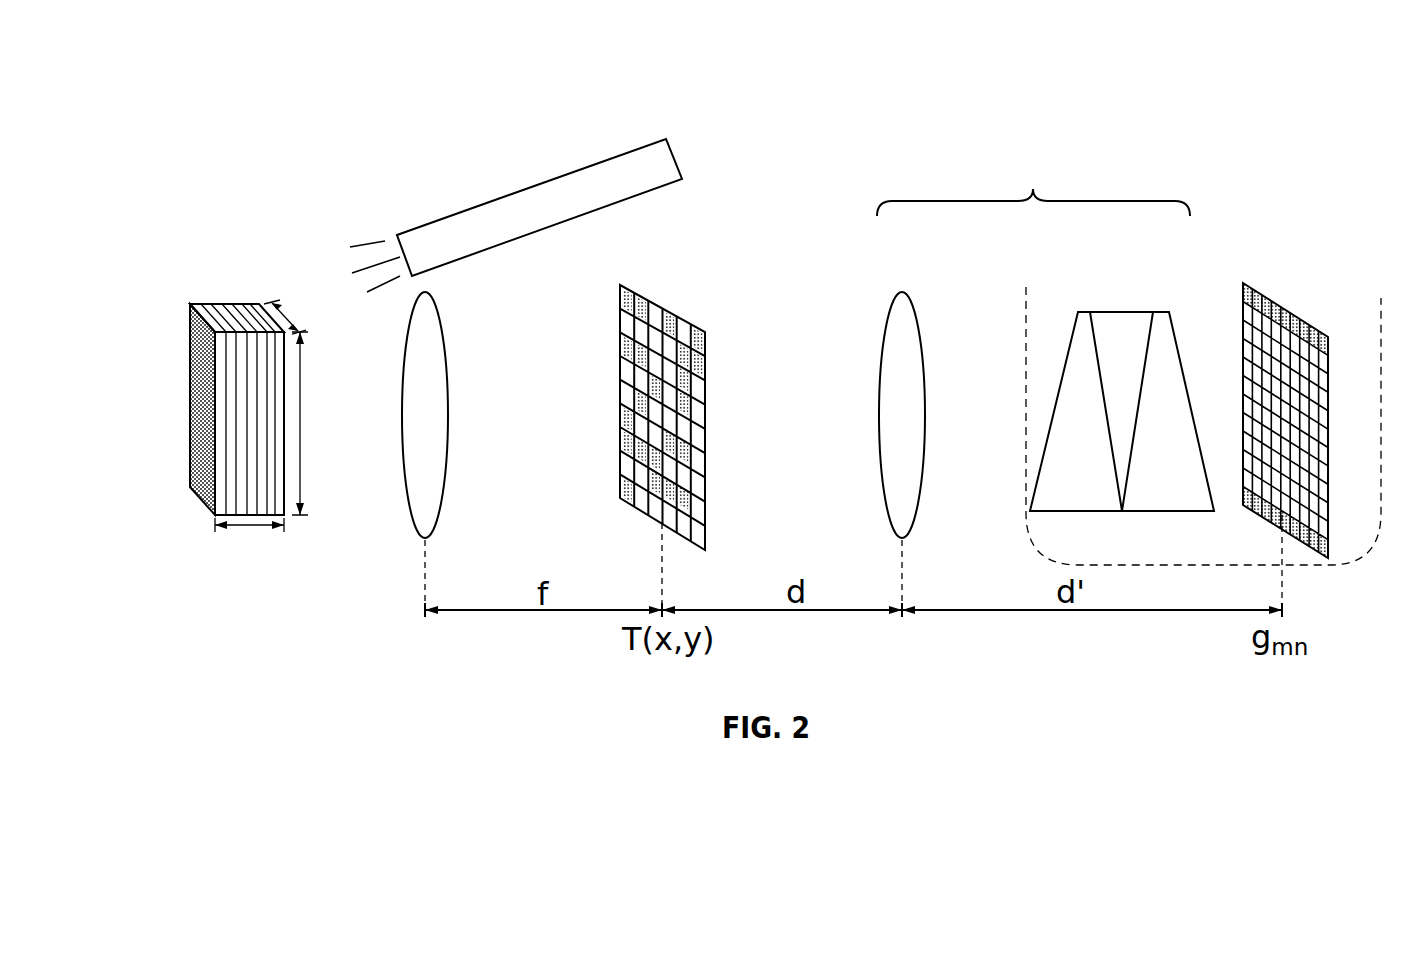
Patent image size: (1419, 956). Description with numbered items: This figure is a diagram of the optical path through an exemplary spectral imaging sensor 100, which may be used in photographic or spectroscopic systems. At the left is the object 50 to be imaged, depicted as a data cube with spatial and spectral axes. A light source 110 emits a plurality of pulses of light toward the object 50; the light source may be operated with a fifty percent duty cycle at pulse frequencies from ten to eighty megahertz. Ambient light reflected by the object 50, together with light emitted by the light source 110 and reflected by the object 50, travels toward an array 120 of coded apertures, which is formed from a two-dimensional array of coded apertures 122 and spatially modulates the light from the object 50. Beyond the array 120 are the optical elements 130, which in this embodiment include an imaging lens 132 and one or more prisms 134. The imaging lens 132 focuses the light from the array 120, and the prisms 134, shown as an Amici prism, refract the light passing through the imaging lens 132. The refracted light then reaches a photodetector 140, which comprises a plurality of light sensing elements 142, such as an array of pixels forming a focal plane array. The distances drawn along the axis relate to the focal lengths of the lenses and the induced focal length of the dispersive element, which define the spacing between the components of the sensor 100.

The spectral imaging sensor 100 is at (250, 100).
The object 50 is at (228, 317).
The light source 110 is at (535, 184).
The array of coded apertures 120 is at (666, 288).
The coded apertures 122 is at (632, 372).
The optical elements 130 is at (1033, 188).
The imaging lens 132 is at (903, 292).
The prisms 134 is at (1125, 311).
The photodetector 140 is at (1263, 297).
The light sensing elements 142 is at (1258, 332).